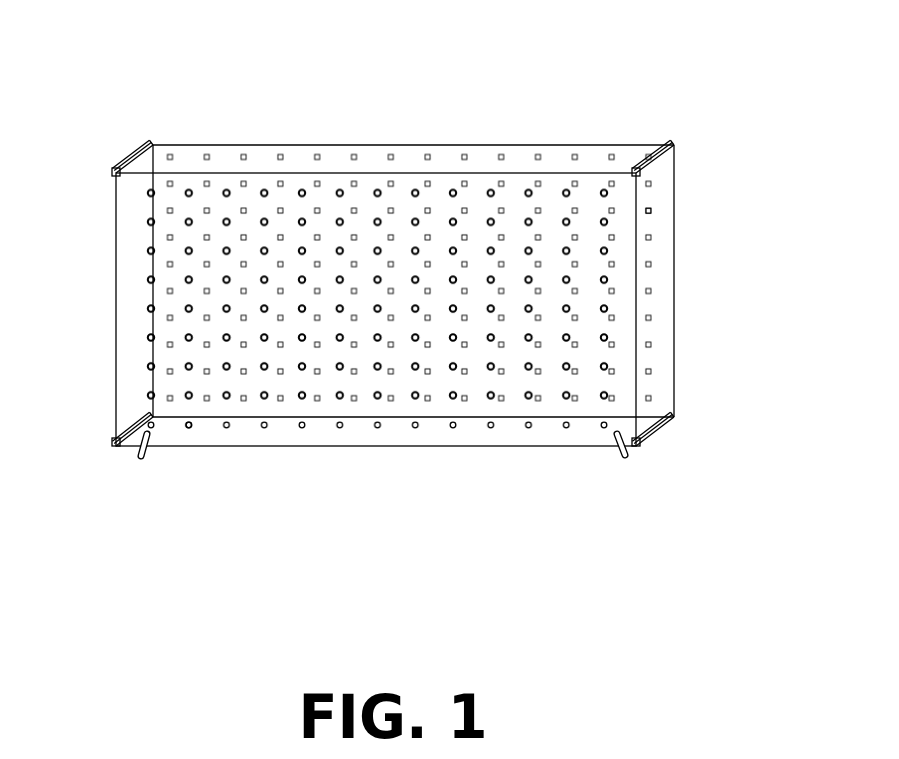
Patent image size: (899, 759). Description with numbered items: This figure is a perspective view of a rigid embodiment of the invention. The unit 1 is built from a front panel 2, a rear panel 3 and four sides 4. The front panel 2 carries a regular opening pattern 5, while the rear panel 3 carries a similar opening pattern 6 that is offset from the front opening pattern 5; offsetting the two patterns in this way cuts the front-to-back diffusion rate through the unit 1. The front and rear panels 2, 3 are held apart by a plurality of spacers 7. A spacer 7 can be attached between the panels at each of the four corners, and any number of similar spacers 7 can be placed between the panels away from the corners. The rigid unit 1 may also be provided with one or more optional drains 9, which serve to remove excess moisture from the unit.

The unit 1 is at (187, 92).
The front panel 2 is at (287, 432).
The rear panel 3 is at (590, 160).
The sides 4 is at (407, 160).
The opening pattern 5 is at (185, 430).
The opening pattern 6 is at (645, 211).
The spacer 7 is at (670, 423).
The drain 9 is at (138, 460).